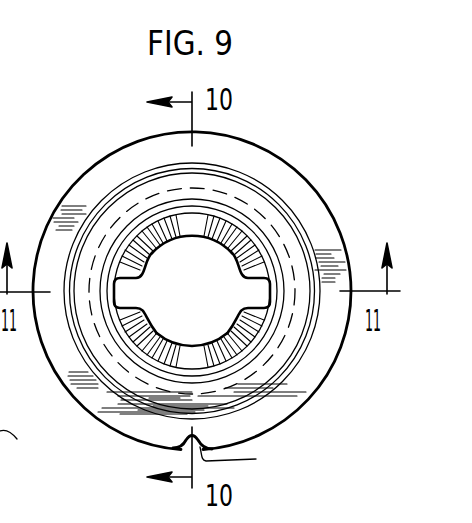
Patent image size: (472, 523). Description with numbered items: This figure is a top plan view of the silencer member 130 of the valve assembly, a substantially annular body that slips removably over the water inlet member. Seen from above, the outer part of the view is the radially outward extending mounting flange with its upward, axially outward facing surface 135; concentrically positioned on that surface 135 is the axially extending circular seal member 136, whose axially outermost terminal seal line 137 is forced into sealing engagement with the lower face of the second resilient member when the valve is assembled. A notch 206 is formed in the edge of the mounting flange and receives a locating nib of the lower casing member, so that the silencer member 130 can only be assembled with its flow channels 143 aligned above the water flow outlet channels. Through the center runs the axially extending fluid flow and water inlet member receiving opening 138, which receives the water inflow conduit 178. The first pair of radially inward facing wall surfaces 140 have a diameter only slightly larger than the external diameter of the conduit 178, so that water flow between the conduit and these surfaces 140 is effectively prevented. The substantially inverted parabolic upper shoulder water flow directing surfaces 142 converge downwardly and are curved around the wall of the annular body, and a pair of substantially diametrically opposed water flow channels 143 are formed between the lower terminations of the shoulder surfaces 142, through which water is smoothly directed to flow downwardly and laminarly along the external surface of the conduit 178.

The silencer member 130 is at (296, 180).
The axial outward facing surface 135 is at (236, 145).
The circular seal member 136 is at (150, 170).
The terminal seal line 137 is at (120, 187).
The water inlet member receiving opening 138 is at (180, 320).
The first pair of radially inward facing wall surfaces 140 is at (232, 255).
The upper shoulder water flow directing surfaces 142 is at (216, 214).
The water flow channels 143 is at (270, 282).
The water inflow conduit 178 is at (26, 442).
The notch 206 is at (246, 459).